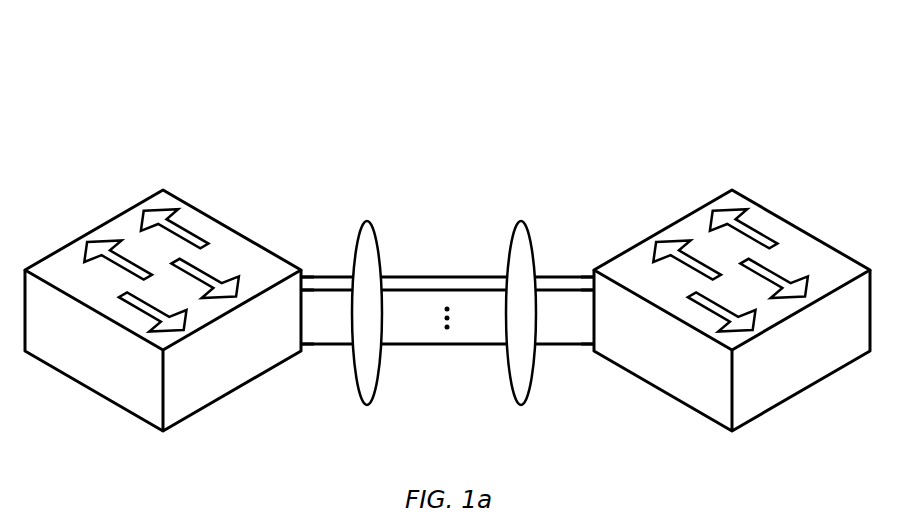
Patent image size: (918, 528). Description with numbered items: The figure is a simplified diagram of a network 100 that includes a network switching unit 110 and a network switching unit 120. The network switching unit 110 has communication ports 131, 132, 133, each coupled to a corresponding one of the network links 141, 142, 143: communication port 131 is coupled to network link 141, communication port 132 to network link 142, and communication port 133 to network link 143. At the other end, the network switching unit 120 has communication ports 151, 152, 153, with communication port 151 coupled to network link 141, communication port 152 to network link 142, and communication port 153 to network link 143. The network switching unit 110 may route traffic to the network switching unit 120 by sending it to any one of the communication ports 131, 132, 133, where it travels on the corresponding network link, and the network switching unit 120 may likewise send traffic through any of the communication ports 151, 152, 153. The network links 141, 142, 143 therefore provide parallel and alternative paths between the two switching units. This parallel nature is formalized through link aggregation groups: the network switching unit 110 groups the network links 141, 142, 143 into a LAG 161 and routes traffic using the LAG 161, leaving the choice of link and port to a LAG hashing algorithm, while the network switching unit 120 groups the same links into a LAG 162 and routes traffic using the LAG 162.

The network 100 is at (140, 113).
The network switching unit 110 is at (108, 222).
The network switching unit 120 is at (792, 223).
The communication port 131 is at (301, 278).
The communication port 132 is at (301, 291).
The communication port 133 is at (301, 344).
The network link 141 is at (448, 290).
The network link 142 is at (453, 277).
The network link 143 is at (442, 344).
The communication port 151 is at (594, 280).
The communication port 152 is at (594, 291).
The communication port 153 is at (594, 345).
The LAG 161 is at (367, 313).
The LAG 162 is at (521, 313).